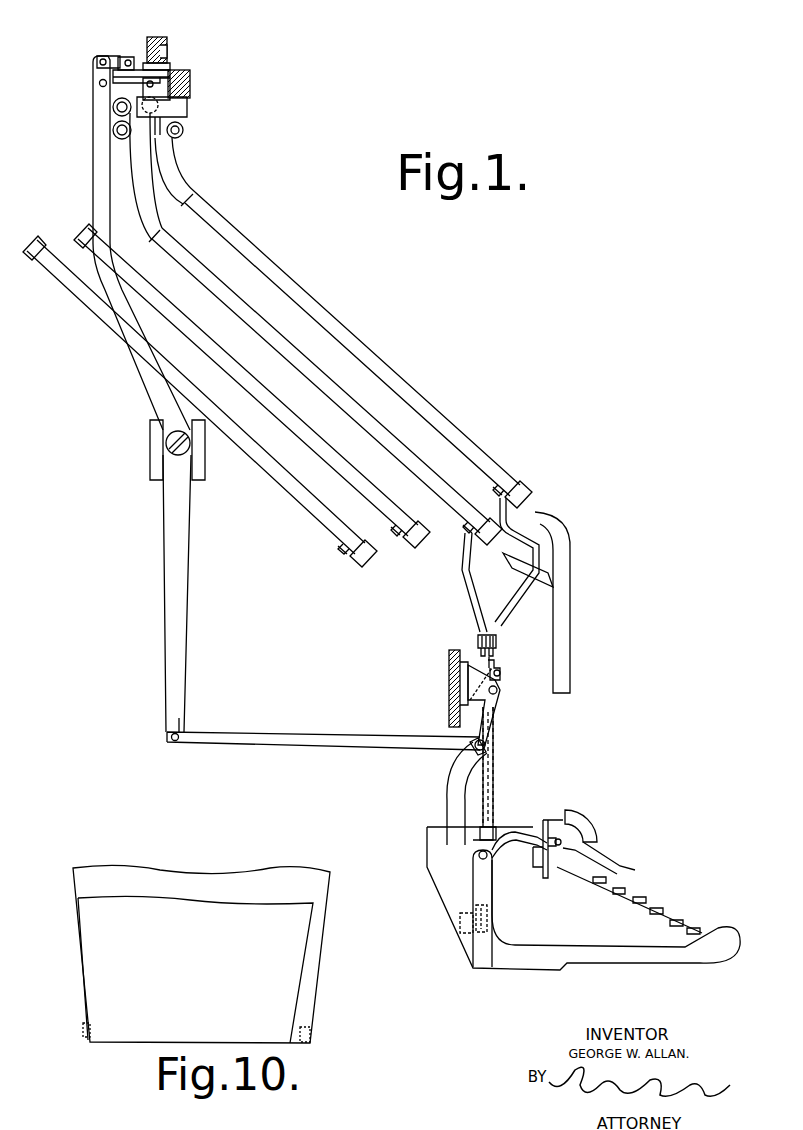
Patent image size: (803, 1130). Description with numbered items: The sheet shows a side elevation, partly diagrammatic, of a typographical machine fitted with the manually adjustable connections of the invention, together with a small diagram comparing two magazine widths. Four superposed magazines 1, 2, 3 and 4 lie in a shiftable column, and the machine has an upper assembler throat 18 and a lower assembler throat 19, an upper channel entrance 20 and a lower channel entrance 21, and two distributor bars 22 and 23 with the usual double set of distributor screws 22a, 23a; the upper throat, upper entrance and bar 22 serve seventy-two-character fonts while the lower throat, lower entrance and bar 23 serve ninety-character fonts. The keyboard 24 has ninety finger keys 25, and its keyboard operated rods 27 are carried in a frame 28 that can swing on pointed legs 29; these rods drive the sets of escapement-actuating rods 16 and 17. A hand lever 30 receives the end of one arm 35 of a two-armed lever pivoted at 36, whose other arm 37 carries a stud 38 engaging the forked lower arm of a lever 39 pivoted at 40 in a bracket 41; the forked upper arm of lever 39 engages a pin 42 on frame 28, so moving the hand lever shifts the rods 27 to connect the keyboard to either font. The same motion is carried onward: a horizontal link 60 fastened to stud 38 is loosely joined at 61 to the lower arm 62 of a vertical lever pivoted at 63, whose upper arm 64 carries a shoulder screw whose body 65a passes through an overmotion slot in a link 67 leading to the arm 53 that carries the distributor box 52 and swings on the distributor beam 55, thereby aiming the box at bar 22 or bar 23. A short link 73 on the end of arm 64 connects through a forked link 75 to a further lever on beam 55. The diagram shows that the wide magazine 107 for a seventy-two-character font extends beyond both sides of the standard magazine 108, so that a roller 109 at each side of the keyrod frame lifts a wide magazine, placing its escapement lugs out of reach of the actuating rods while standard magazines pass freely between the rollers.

In FIG. 1, the magazine 1 is at (413, 392).
In FIG. 1, the magazine 2 is at (378, 424).
In FIG. 1, the magazine 3 is at (349, 465).
In FIG. 1, the magazine 4 is at (317, 500).
In FIG. 1, the actuating rods 16 is at (465, 580).
In FIG. 1, the actuating rods 17 is at (498, 639).
In FIG. 1, the upper assembler throat 18 is at (565, 528).
In FIG. 1, the lower assembler throat 19 is at (524, 571).
In FIG. 1, the upper channel entrance 20 is at (178, 170).
In FIG. 1, the lower channel entrance 21 is at (100, 165).
In FIG. 1, the distributor bar 22 is at (171, 88).
In FIG. 1, the distributor screws 22a is at (182, 114).
In FIG. 1, the distributor bar 23 is at (112, 107).
In FIG. 1, the distributor screws 23a is at (112, 131).
In FIG. 1, the keyboard 24 is at (600, 966).
In FIG. 1, the finger keys 25 is at (664, 915).
In FIG. 1, the keyboard operated rods 27 is at (494, 771).
In FIG. 1, the frame 28 is at (486, 745).
In FIG. 1, the pointed legs 29 is at (496, 826).
In FIG. 1, the hand lever 30 is at (622, 870).
In FIG. 1, the arm 35 is at (512, 847).
In FIG. 1, the pivot 36 is at (478, 857).
In FIG. 1, the arm 37 is at (449, 793).
In FIG. 1, the stud 38 is at (470, 750).
In FIG. 1, the lever 39 is at (493, 712).
In FIG. 1, the pivot 40 is at (498, 690).
In FIG. 1, the bracket 41 is at (463, 705).
In FIG. 1, the pin 42 is at (501, 671).
In FIG. 1, the distributor box 52 is at (184, 133).
In FIG. 1, the arm 53 is at (184, 72).
In FIG. 1, the bracket or beam 55 is at (158, 42).
In FIG. 1, the horizontal link 60 is at (300, 748).
In FIG. 1, the joint 61 is at (175, 742).
In FIG. 1, the lower arm 62 is at (166, 636).
In FIG. 1, the pivot 63 is at (167, 447).
In FIG. 1, the upper arm 64 is at (153, 398).
In FIG. 1, the body of shoulder screw 65a is at (100, 84).
In FIG. 1, the link 67 is at (113, 73).
In FIG. 1, the short link 73 is at (104, 56).
In FIG. 1, the link 75 is at (128, 57).
In FIG. 10, the magazine 107 is at (325, 890).
In FIG. 10, the magazine 108 is at (305, 953).
In FIG. 10, the roller 109 is at (83, 1030).